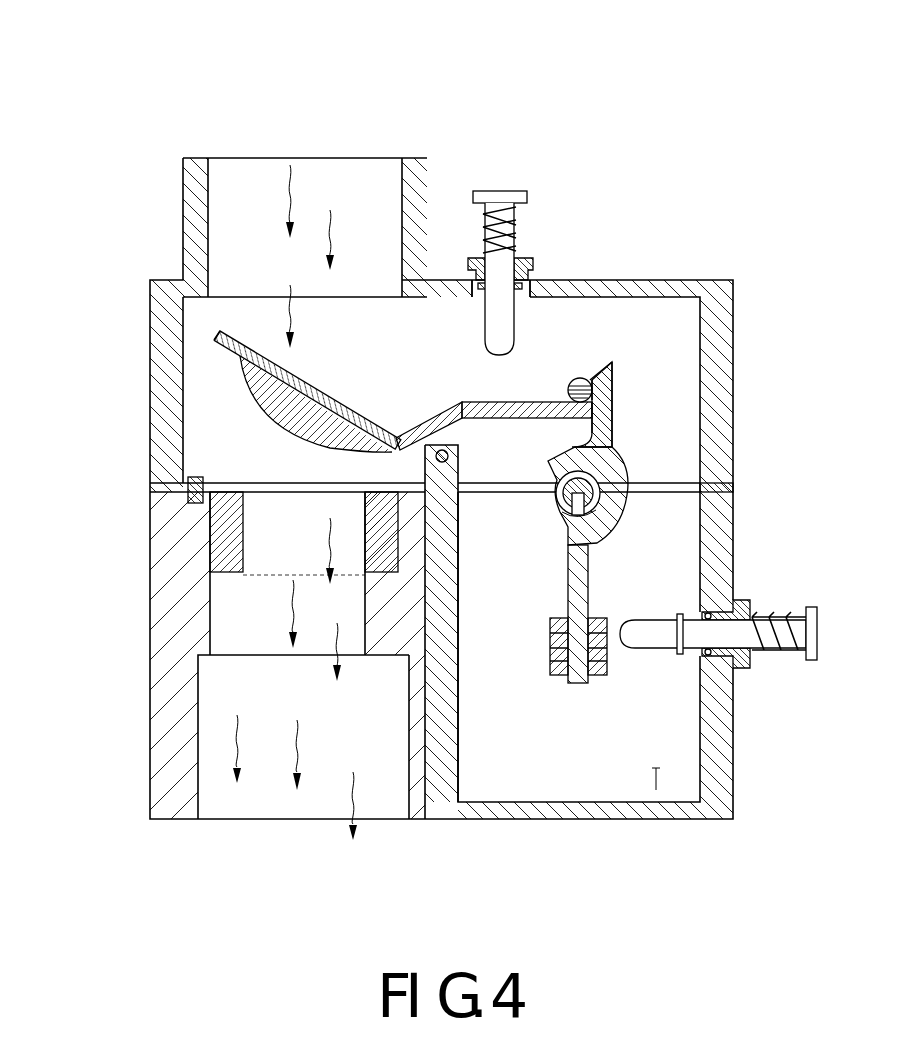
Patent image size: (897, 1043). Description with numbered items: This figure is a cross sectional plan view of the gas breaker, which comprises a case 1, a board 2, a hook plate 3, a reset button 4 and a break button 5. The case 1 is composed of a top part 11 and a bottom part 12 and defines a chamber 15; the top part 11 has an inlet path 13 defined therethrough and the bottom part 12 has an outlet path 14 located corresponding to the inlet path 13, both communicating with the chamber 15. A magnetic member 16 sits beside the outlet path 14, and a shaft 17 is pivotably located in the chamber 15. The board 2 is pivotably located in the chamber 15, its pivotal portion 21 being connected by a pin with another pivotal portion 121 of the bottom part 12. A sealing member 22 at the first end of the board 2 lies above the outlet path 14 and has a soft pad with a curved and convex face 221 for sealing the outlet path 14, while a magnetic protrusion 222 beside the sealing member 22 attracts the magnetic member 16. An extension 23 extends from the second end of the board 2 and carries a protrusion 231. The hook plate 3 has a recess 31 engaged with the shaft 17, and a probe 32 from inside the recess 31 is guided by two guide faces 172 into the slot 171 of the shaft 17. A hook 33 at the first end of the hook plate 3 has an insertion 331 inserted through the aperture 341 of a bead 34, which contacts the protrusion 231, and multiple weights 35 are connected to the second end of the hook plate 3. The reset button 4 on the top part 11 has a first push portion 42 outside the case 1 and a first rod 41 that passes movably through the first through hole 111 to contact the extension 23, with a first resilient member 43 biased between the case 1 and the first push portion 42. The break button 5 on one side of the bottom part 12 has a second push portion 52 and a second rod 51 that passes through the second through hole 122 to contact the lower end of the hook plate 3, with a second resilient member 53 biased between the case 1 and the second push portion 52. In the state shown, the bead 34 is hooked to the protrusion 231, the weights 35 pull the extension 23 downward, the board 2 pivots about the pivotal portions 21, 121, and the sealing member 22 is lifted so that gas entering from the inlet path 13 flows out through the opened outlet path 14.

The case 1 is at (434, 828).
The top part 11 is at (165, 298).
The first through hole 111 is at (522, 292).
The bottom part 12 is at (180, 745).
The pivotal portion 121 is at (447, 478).
The second through hole 122 is at (740, 605).
The inlet path 13 is at (235, 183).
The outlet path 14 is at (283, 559).
The chamber 15 is at (650, 800).
The magnetic member 16 is at (190, 493).
The shaft 17 is at (558, 495).
The slot 171 is at (572, 520).
The guide faces 172 is at (578, 505).
The board 2 is at (235, 565).
The pivotal portion 21 is at (437, 428).
The sealing member 22 is at (290, 392).
The curved and convex face 221 is at (307, 443).
The magnetic protrusion 222 is at (216, 341).
The extension 23 is at (520, 401).
The protrusion 231 is at (565, 375).
The hook plate 3 is at (643, 528).
The recess 31 is at (613, 430).
The probe 32 is at (627, 500).
The hook 33 is at (615, 368).
The insertion 331 is at (613, 395).
The bead 34 is at (608, 370).
The aperture 341 is at (606, 390).
The weights 35 is at (568, 688).
The reset button 4 is at (523, 215).
The first rod 41 is at (535, 262).
The first push portion 42 is at (497, 192).
The first resilient member 43 is at (512, 238).
The break button 5 is at (737, 644).
The second rod 51 is at (693, 643).
The second push portion 52 is at (813, 643).
The second resilient member 53 is at (777, 650).